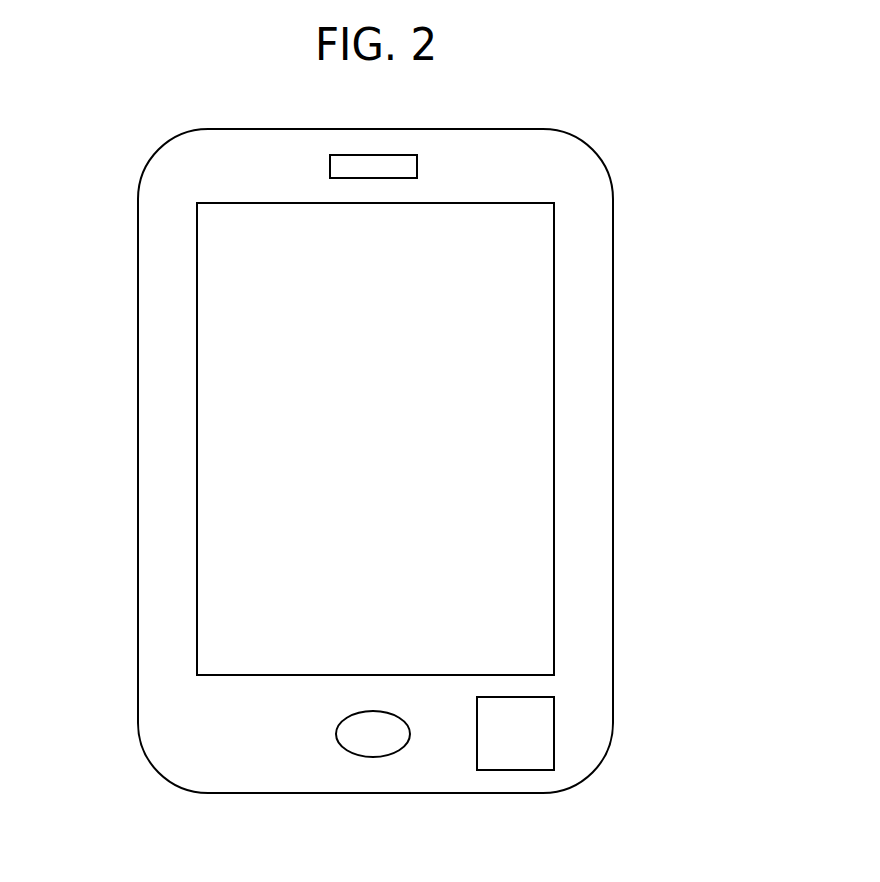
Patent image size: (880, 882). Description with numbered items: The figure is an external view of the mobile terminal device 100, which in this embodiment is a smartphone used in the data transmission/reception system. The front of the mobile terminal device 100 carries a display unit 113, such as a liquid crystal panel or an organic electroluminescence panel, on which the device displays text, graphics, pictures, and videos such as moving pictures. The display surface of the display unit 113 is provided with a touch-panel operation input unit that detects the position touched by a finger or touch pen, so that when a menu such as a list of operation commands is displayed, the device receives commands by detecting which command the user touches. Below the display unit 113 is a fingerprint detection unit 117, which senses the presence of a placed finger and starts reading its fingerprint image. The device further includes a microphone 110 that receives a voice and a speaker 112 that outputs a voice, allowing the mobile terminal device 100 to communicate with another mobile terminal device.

The mobile terminal device 100 is at (138, 263).
The microphone 110 is at (336, 734).
The speaker 112 is at (418, 166).
The display unit 113 is at (554, 323).
The fingerprint detection unit 117 is at (513, 770).